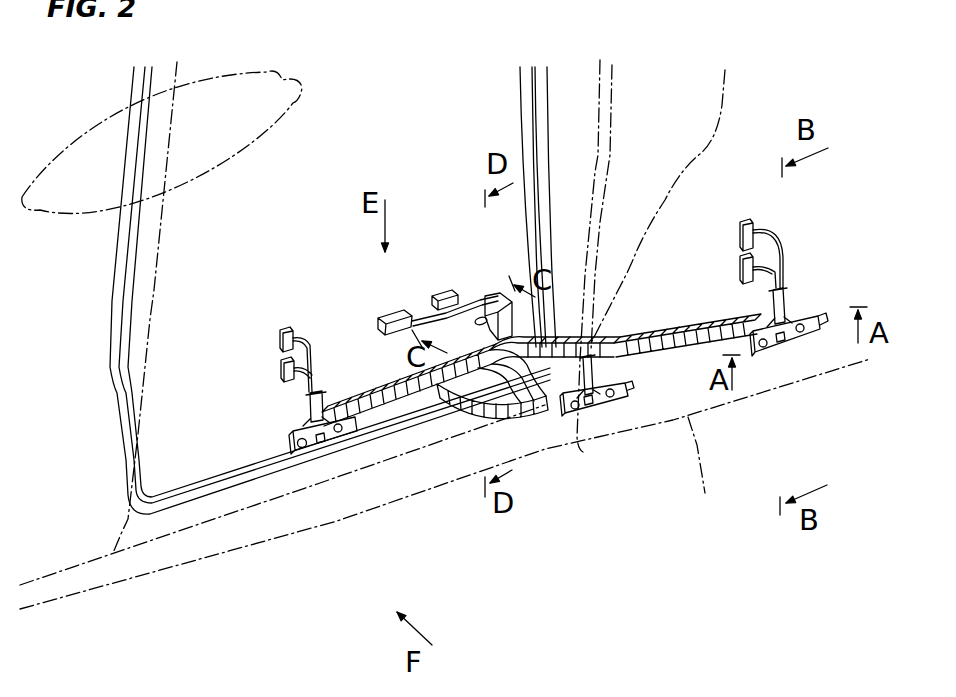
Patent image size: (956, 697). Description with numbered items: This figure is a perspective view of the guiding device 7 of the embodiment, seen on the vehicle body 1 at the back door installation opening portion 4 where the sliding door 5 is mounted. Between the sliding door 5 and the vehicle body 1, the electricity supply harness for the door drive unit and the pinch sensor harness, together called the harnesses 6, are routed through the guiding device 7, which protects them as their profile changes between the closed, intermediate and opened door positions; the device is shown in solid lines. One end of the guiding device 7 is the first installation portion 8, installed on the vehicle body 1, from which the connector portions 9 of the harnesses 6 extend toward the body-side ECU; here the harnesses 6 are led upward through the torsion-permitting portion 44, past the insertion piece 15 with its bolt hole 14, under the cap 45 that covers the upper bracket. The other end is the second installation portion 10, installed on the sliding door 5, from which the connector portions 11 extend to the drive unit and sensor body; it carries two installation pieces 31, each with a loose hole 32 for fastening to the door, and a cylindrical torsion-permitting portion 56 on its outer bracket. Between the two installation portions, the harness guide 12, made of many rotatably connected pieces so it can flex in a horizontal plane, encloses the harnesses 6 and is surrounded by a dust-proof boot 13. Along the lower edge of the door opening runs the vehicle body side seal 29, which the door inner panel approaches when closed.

The vehicle body 1 is at (698, 157).
The back door installation opening portion 4 is at (170, 478).
The sliding door 5 is at (711, 511).
The harnesses 6 is at (318, 390).
The guiding device 7 is at (558, 422).
The first installation portion 8 is at (500, 303).
The connector portions 9 is at (383, 313).
The second installation portion 10 is at (536, 442).
The connector portions 11 is at (280, 367).
The harness guide 12 is at (380, 400).
The dust-proof boot 13 is at (537, 410).
The bolt hole 14 is at (480, 408).
The insertion piece 15 is at (478, 318).
The vehicle body side seal 29 is at (120, 385).
The installation pieces 31 is at (290, 437).
The loose hole 32 is at (303, 448).
The torsion-permitting portion 44 is at (592, 293).
The cap 45 is at (548, 330).
The cylindrical torsion-permitting portion 56 is at (310, 390).